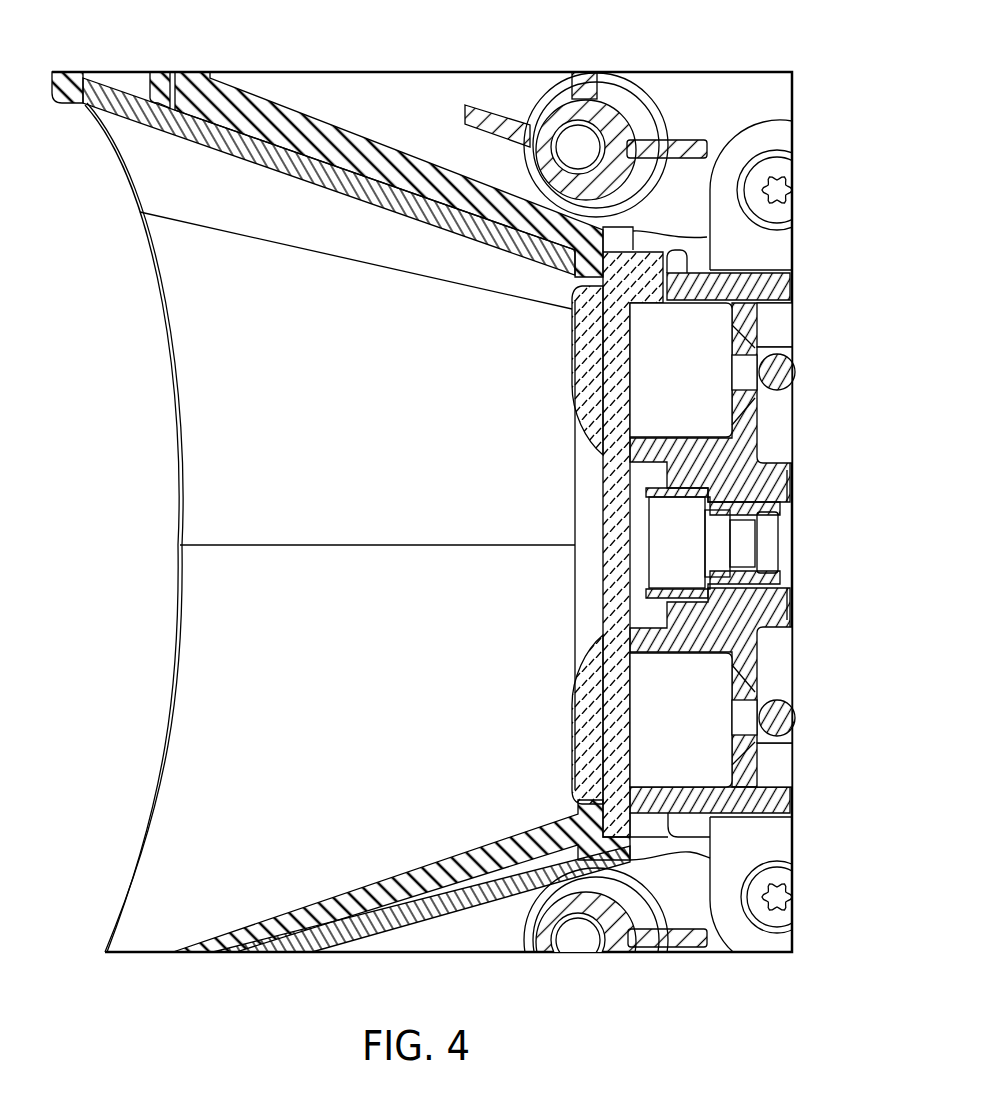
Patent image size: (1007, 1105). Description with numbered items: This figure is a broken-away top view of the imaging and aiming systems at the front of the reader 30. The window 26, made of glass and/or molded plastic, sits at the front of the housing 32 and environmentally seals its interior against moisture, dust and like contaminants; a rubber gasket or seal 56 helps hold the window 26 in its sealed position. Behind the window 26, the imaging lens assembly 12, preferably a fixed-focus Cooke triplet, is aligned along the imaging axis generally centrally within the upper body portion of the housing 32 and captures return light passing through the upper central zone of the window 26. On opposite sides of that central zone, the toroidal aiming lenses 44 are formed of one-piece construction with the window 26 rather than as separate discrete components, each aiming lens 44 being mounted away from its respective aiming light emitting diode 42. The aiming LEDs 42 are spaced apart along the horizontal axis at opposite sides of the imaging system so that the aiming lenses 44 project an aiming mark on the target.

The imaging lens assembly 12 is at (783, 581).
The window 26 is at (610, 583).
The reader 30 is at (810, 128).
The housing 32 is at (76, 75).
The aiming light emitting diode 42 is at (778, 373).
The toroidal aiming lens 44 is at (576, 366).
The rubber gasket or seal 56 is at (328, 142).